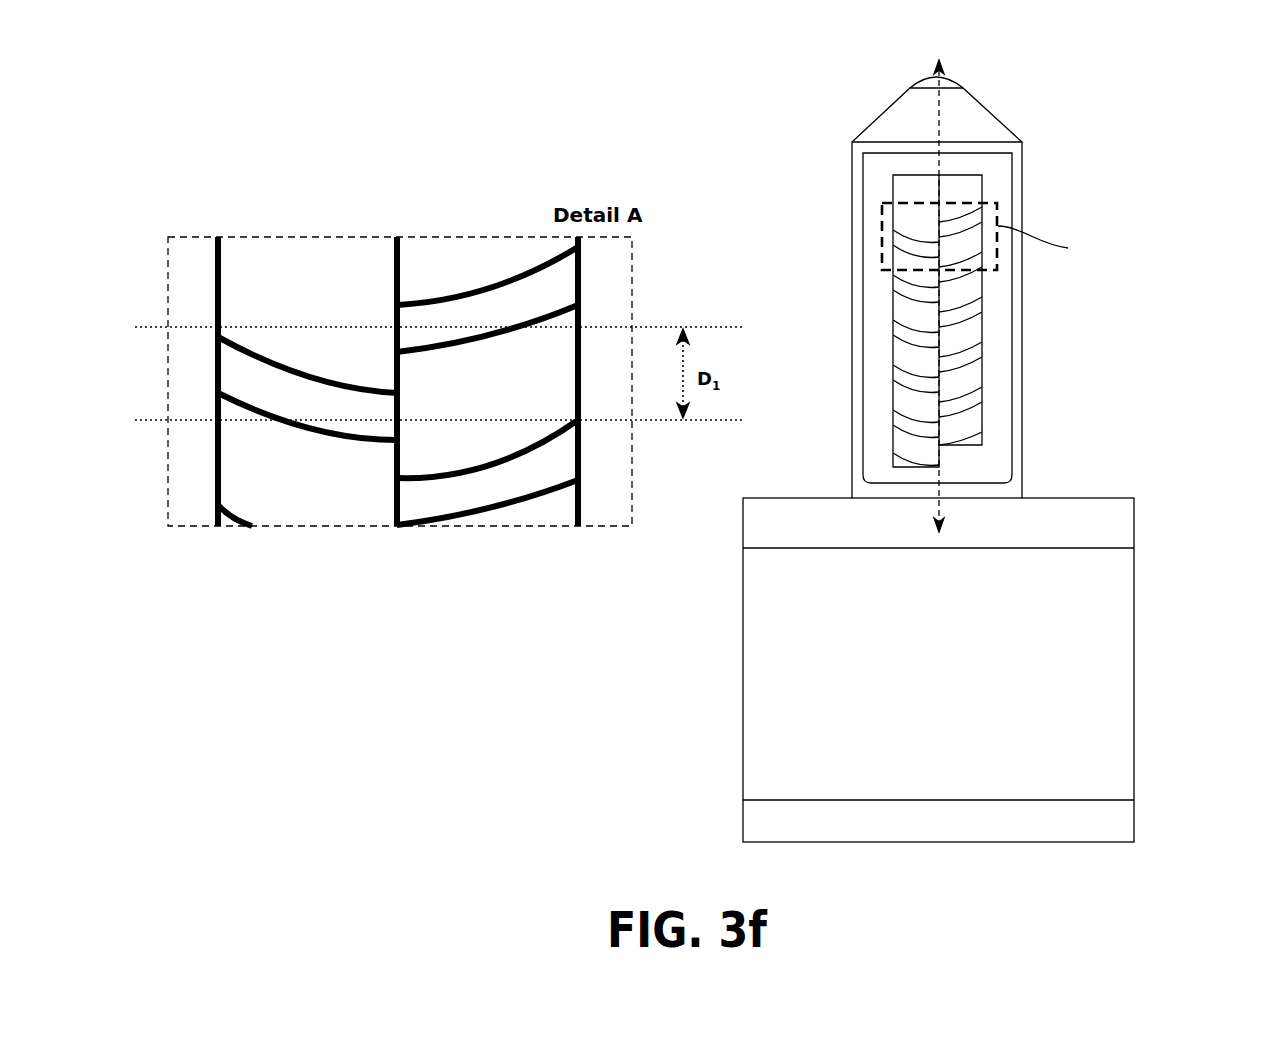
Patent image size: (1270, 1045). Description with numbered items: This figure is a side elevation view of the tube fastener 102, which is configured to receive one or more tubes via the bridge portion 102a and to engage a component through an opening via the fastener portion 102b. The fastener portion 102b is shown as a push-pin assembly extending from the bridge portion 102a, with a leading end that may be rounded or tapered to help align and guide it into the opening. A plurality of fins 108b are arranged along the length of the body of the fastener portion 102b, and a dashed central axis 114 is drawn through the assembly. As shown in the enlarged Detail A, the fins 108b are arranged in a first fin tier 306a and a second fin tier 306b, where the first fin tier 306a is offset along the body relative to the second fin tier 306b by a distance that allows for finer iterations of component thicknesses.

The tube fastener 102 is at (994, 435).
The bridge portion 102a is at (1182, 502).
The fastener portion 102b is at (802, 215).
The fins 108b is at (667, 401).
The central axis 114 is at (934, 66).
The first fin tier 306a is at (387, 537).
The second fin tier 306b is at (487, 417).